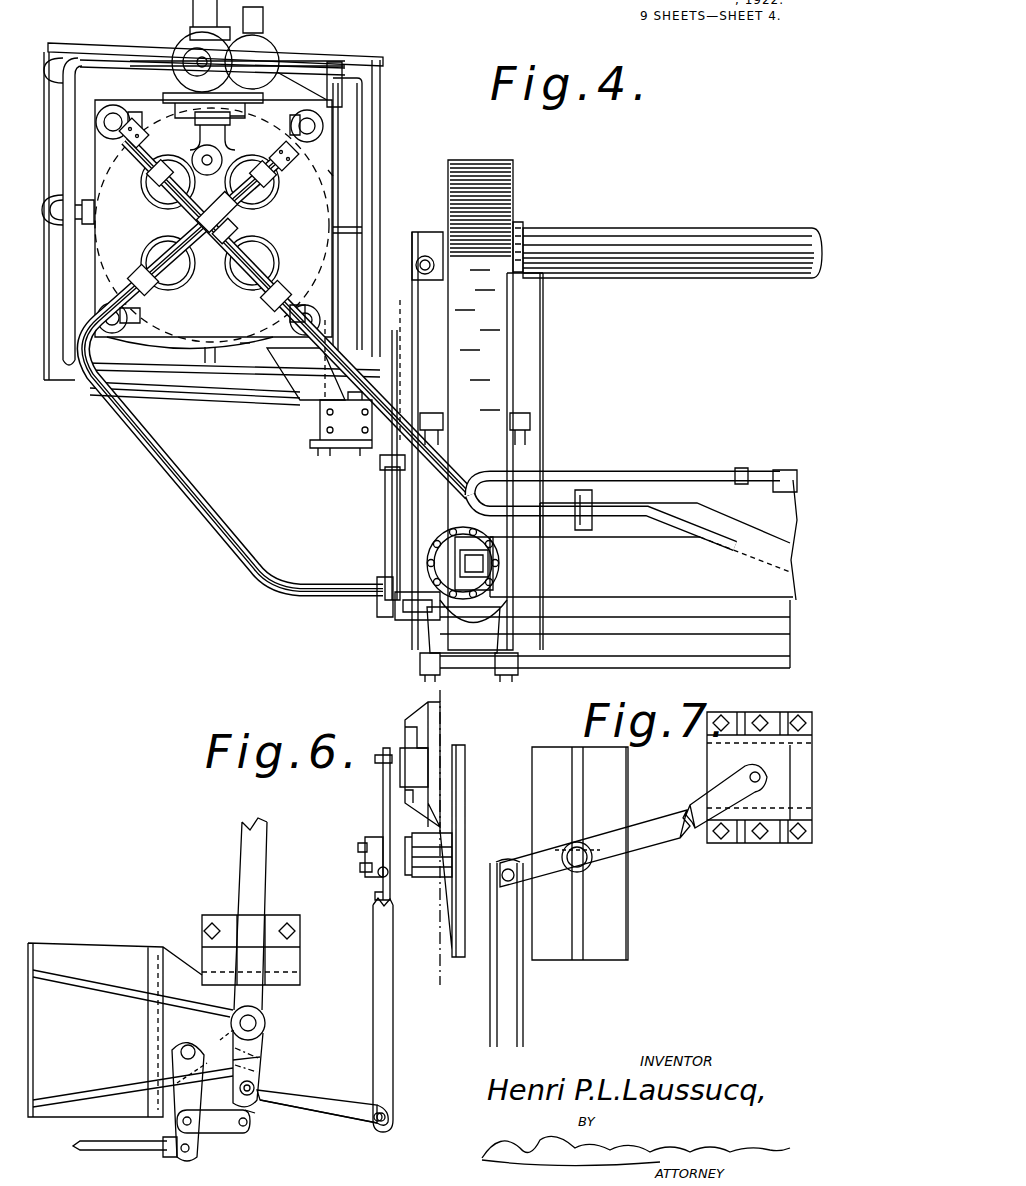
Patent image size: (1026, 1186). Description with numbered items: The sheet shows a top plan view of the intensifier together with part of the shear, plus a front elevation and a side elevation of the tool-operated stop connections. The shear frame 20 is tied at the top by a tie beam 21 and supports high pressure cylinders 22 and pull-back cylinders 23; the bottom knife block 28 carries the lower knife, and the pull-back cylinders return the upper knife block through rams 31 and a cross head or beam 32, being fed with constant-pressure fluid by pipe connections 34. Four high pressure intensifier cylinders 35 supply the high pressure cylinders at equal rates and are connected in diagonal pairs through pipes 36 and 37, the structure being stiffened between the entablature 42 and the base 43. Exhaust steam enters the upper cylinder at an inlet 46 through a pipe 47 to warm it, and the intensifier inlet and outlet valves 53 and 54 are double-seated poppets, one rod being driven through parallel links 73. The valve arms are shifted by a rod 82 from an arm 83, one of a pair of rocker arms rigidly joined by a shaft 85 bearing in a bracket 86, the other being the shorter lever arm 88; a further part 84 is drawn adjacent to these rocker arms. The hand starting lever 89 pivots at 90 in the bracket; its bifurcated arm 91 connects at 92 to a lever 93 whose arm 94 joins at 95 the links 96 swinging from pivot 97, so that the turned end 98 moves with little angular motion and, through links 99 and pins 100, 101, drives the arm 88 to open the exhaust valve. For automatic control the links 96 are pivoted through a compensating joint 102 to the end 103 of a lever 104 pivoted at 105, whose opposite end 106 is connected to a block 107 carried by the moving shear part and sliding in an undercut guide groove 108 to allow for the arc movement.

In FIG. 4, the frame 20 is at (513, 366).
In FIG. 4, the tie beam 21 is at (700, 637).
In FIG. 4, the high pressure cylinders 22 is at (470, 620).
In FIG. 4, the pull-back cylinders 23 is at (430, 622).
In FIG. 4, the bottom knife block 28 is at (612, 668).
In FIG. 4, the rams 31 is at (478, 563).
In FIG. 4, the cross head or beam 32 is at (643, 540).
In FIG. 4, the pipe connections 34 is at (667, 470).
In FIG. 4, the high pressure intensifier cylinders 35 is at (160, 205).
In FIG. 4, the pipe 36 is at (388, 398).
In FIG. 4, the pipe 37 is at (210, 523).
In FIG. 4, the entablature 42 is at (241, 345).
In FIG. 4, the base 43 is at (180, 380).
In FIG. 4, the exhaust steam inlet 46 is at (87, 226).
In FIG. 4, the pipe 47 is at (70, 211).
In FIG. 4, the intensifier inlet valve 53 is at (258, 40).
In FIG. 4, the intensifier outlet valve 54 is at (205, 55).
In FIG. 4, the parallel links 73 is at (195, 62).
In FIG. 4, the rod 82 is at (300, 60).
In FIG. 6, the rod 82 is at (98, 1153).
In FIG. 6, the arm 83 is at (196, 1142).
In FIG. 6, the lever 84 is at (234, 1069).
In FIG. 4, the shaft 85 is at (328, 177).
In FIG. 6, the shaft 85 is at (188, 1050).
In FIG. 4, the bracket 86 is at (310, 405).
In FIG. 6, the bracket 86 is at (164, 1016).
In FIG. 6, the lever arm 88 is at (178, 1088).
In FIG. 4, the hand starting lever 89 is at (352, 447).
In FIG. 6, the hand starting lever 89 is at (245, 866).
In FIG. 6, the pivot 90 is at (262, 1025).
In FIG. 6, the arm 91 is at (260, 1058).
In FIG. 6, the connection 92 is at (254, 1085).
In FIG. 4, the lever 93 is at (382, 440).
In FIG. 6, the lever 93 is at (317, 1112).
In FIG. 6, the arm 94 is at (345, 1108).
In FIG. 6, the connection 95 is at (383, 1118).
In FIG. 6, the links 96 is at (373, 955).
In FIG. 7, the links 96 is at (528, 1020).
In FIG. 6, the pivot 97 is at (378, 876).
In FIG. 6, the turned end 98 is at (257, 1110).
In FIG. 6, the links 99 is at (243, 1132).
In FIG. 6, the pin 100 is at (263, 1117).
In FIG. 6, the pin 101 is at (180, 1123).
In FIG. 6, the compensating joint 102 is at (372, 840).
In FIG. 7, the compensating joint 102 is at (508, 868).
In FIG. 7, the end of lever 103 is at (540, 870).
In FIG. 6, the lever 104 is at (383, 812).
In FIG. 7, the lever 104 is at (600, 868).
In FIG. 6, the pivot 105 is at (360, 853).
In FIG. 7, the pivot 105 is at (578, 852).
In FIG. 7, the opposite end of lever 106 is at (680, 842).
In FIG. 6, the block 107 is at (413, 760).
In FIG. 7, the block 107 is at (775, 786).
In FIG. 6, the undercut guide groove 108 is at (413, 723).
In FIG. 7, the undercut guide groove 108 is at (790, 822).